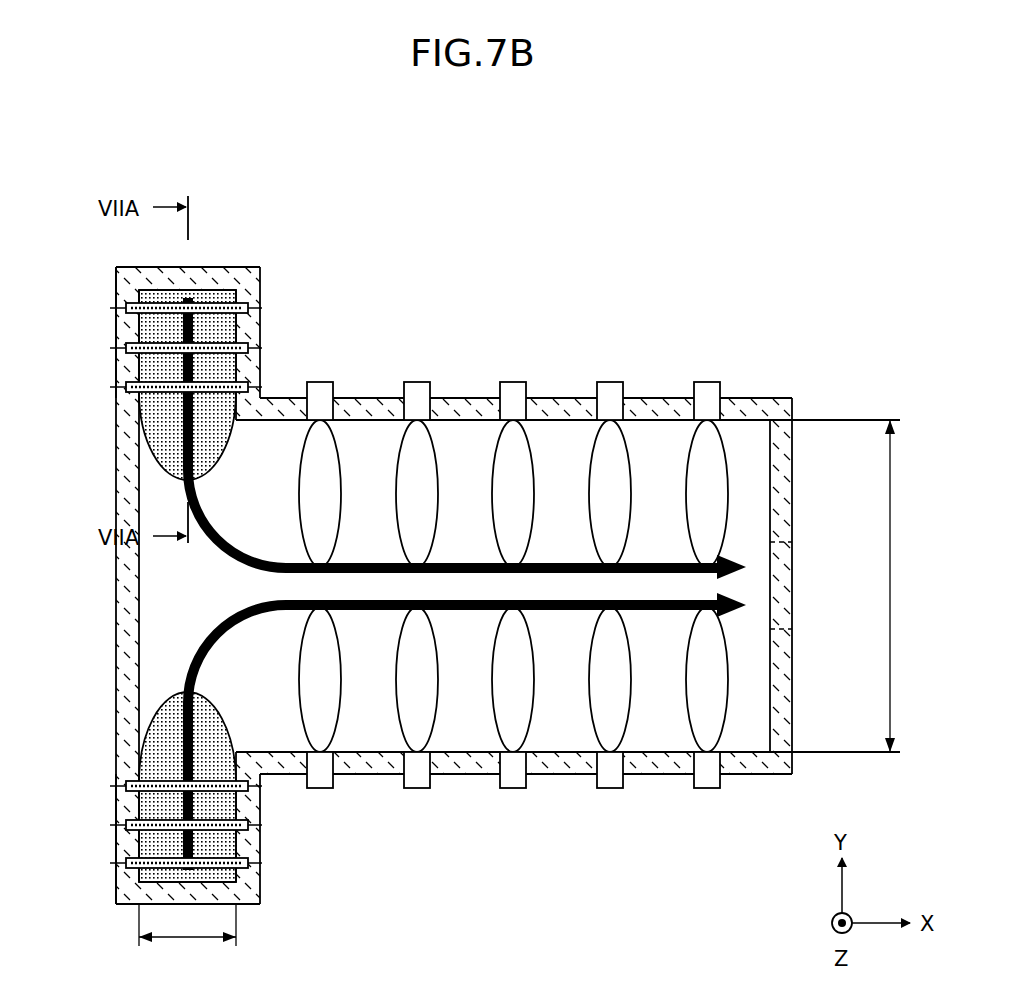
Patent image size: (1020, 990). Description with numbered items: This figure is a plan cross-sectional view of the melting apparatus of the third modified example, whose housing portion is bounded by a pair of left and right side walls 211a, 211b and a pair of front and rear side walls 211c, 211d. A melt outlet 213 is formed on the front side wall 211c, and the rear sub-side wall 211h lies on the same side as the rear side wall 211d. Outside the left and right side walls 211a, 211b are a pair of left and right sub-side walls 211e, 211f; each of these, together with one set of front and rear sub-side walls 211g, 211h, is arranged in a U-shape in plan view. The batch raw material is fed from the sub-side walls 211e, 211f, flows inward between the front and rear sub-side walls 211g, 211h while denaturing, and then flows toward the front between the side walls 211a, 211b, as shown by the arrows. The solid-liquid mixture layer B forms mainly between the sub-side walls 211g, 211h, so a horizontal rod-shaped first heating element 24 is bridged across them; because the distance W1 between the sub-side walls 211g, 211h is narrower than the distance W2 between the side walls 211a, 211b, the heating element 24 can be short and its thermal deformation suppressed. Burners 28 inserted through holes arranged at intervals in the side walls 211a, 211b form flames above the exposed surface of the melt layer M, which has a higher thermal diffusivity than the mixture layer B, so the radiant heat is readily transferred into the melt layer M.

The first heating element 24 is at (163, 303).
The burner 28 is at (700, 388).
The left side wall 211a is at (463, 410).
The right side wall 211b is at (463, 762).
The front side wall 211c is at (787, 475).
The rear side wall 211d is at (128, 488).
The left sub-side wall 211e is at (210, 275).
The right sub-side wall 211f is at (210, 895).
The front sub-side wall 211g is at (254, 330).
The rear sub-side wall 211h is at (128, 322).
The melt outlet 213 is at (787, 583).
The solid-liquid mixture layer B is at (165, 432).
The melt layer M is at (155, 600).
The distance between the pair of front and rear sub-side walls W1 is at (187, 938).
The distance between the pair of left and right side walls W2 is at (909, 586).